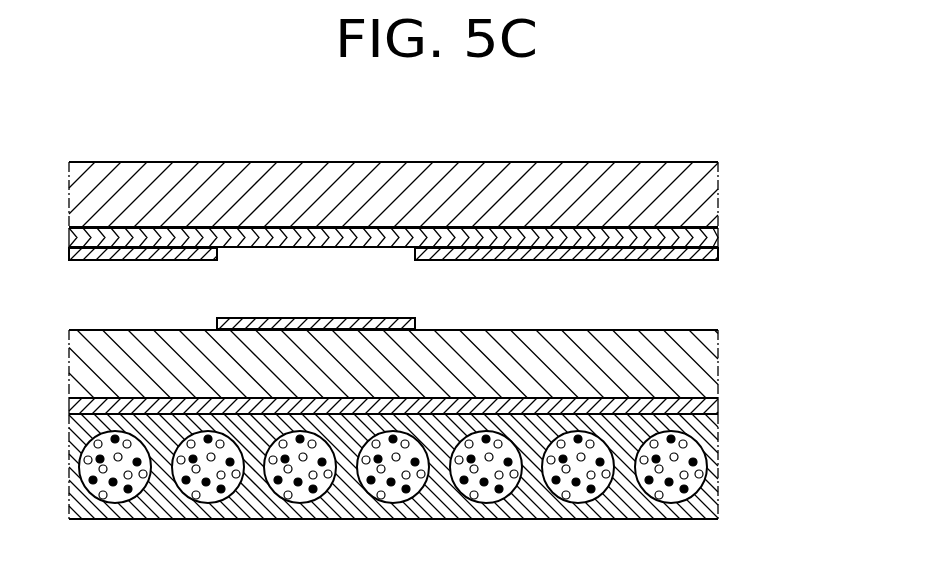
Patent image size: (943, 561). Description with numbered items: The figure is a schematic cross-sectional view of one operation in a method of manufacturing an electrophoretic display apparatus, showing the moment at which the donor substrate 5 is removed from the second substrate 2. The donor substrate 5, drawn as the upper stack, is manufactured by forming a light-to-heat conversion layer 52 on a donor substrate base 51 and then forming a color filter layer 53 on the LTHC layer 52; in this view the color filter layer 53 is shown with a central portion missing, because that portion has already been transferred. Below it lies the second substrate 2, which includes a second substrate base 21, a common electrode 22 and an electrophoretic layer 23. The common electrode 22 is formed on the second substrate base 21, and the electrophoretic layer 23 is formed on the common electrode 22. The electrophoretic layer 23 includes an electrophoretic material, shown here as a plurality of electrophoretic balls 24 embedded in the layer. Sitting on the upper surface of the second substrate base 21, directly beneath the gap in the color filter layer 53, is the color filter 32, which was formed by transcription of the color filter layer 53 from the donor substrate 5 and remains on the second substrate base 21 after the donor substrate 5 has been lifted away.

The donor substrate 5 is at (439, 173).
The donor substrate base 51 is at (718, 186).
The light-to-heat conversion (LTHC) layer 52 is at (718, 232).
The color filter layer 53 is at (718, 254).
The color filter 32 is at (323, 316).
The second substrate 2 is at (452, 424).
The second substrate base 21 is at (712, 358).
The common electrode 22 is at (712, 406).
The electrophoretic layer 23 is at (712, 443).
The electrophoretic balls 24 is at (435, 467).